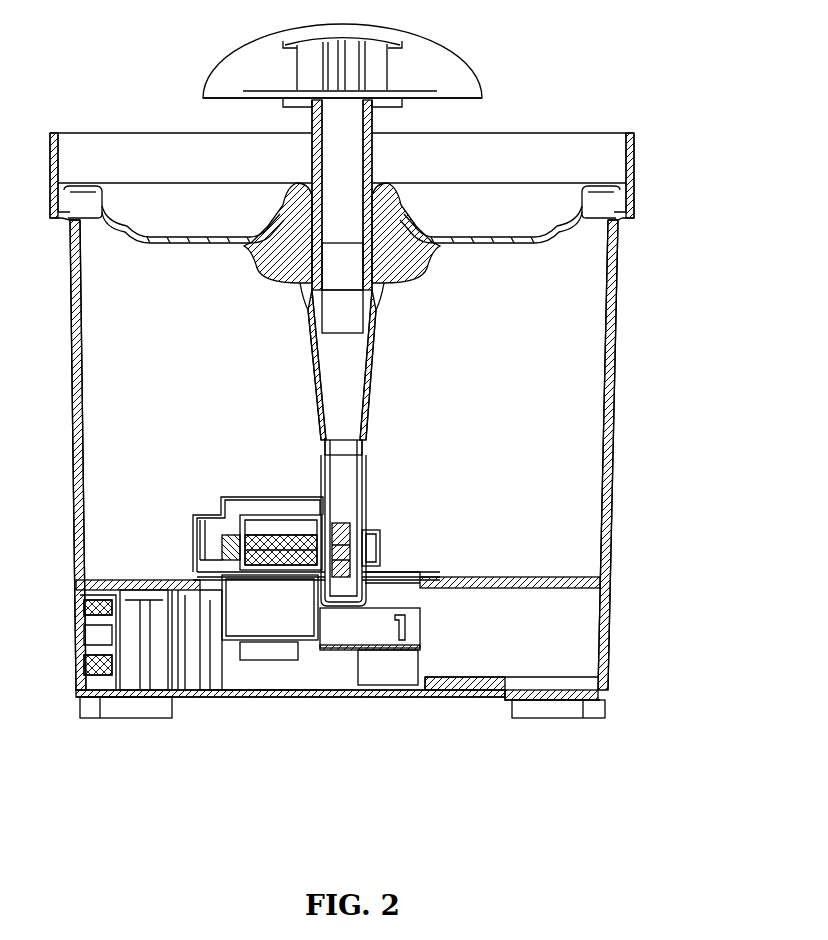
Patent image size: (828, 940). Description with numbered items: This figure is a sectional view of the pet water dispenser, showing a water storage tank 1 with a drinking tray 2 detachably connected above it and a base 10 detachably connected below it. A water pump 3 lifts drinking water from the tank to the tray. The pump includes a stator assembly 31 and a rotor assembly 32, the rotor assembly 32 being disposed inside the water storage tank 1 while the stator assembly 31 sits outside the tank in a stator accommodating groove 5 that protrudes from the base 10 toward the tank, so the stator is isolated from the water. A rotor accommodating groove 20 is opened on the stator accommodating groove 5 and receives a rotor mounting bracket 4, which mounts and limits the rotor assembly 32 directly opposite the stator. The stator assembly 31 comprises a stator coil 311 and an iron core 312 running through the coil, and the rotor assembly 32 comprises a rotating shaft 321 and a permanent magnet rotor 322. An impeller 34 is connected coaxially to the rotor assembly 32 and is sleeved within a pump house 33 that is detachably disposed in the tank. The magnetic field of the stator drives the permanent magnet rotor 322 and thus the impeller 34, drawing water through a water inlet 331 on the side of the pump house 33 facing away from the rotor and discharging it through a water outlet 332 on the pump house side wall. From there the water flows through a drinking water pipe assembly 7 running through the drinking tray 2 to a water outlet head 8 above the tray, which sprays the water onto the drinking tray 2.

The water storage tank 1 is at (608, 343).
The drinking tray 2 is at (634, 190).
The water pump 3 is at (430, 455).
The rotor mounting bracket 4 is at (217, 537).
The stator accommodating groove 5 is at (213, 662).
The drinking water pipe assembly 7 is at (345, 378).
The water outlet head 8 is at (437, 60).
The base 10 is at (605, 640).
The rotor accommodating groove 20 is at (207, 555).
The stator assembly 31 is at (332, 795).
The stator coil 311 is at (298, 630).
The iron core 312 is at (262, 660).
The rotor assembly 32 is at (296, 440).
The rotating shaft 321 is at (240, 525).
The permanent magnet rotor 322 is at (297, 535).
The pump house 33 is at (338, 503).
The water inlet 331 is at (382, 541).
The water outlet 332 is at (345, 440).
The impeller 34 is at (360, 528).